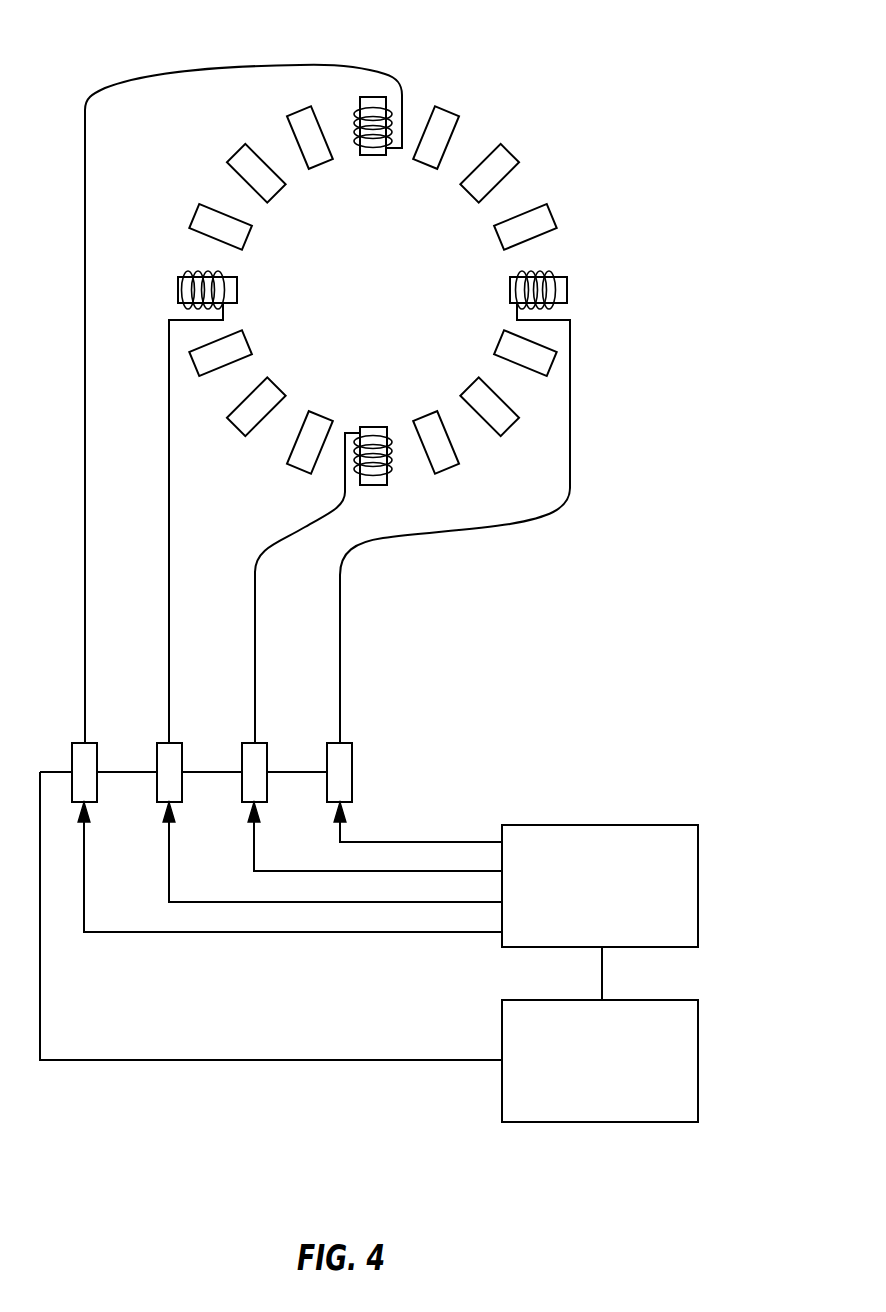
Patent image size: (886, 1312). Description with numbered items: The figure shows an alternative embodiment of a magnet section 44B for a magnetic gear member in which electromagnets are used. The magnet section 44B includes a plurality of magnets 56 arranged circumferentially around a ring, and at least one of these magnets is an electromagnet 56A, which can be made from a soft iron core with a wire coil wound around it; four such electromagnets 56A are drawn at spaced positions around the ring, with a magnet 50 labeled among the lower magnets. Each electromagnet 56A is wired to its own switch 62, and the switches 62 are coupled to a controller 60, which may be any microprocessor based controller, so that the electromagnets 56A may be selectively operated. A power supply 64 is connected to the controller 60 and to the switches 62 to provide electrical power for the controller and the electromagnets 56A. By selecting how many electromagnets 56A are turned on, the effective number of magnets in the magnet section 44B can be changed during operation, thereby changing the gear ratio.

The magnet section 44B is at (657, 61).
The magnet 50 is at (453, 468).
The magnets 56 is at (236, 158).
The electromagnet 56A is at (372, 155).
The controller 60 is at (667, 825).
The switch 62 is at (88, 742).
The power supply 64 is at (667, 1000).